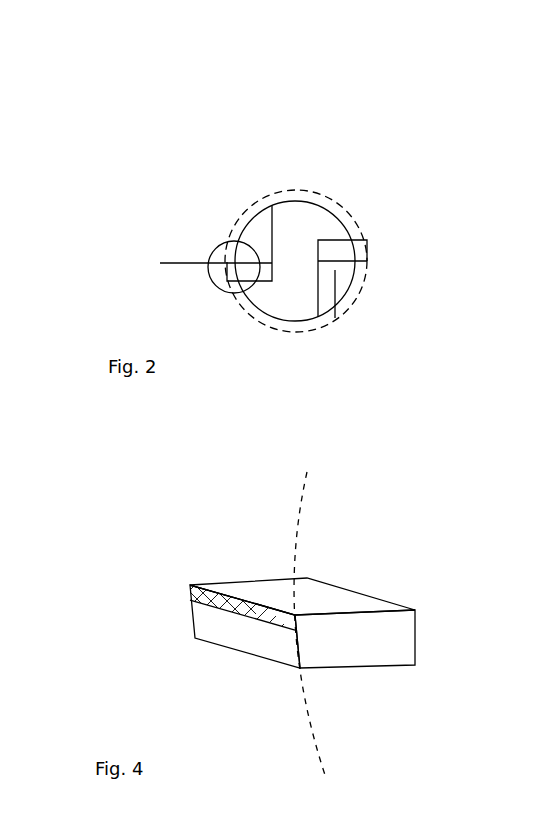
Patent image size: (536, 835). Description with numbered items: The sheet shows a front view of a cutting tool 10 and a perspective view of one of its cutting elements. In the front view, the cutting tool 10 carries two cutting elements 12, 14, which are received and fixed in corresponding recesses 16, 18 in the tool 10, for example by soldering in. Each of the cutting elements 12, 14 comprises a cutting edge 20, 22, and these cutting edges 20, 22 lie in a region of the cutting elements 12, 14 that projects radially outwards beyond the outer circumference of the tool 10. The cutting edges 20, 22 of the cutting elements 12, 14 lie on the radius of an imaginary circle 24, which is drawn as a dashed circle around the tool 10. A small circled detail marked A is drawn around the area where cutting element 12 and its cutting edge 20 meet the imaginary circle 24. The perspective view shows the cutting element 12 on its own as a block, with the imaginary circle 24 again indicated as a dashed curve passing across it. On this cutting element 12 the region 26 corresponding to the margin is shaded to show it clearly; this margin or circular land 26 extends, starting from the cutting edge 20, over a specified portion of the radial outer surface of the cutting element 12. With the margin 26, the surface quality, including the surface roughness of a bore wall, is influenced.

In FIG. 2, the cutting tool 10 is at (428, 128).
In FIG. 2, the cutting element 12 is at (267, 277).
In FIG. 4, the cutting element 12 is at (372, 625).
In FIG. 2, the cutting element 14 is at (350, 248).
In FIG. 2, the recess 16 is at (258, 230).
In FIG. 2, the recess 18 is at (335, 318).
In FIG. 2, the cutting edge 20 is at (368, 261).
In FIG. 2, the cutting edge 22 is at (160, 263).
In FIG. 4, the cutting edge 22 is at (190, 586).
In FIG. 2, the imaginary circle 24 is at (228, 236).
In FIG. 4, the imaginary circle 24 is at (297, 522).
In FIG. 4, the margin 26 is at (190, 598).
In FIG. 2, the detail A is at (216, 285).